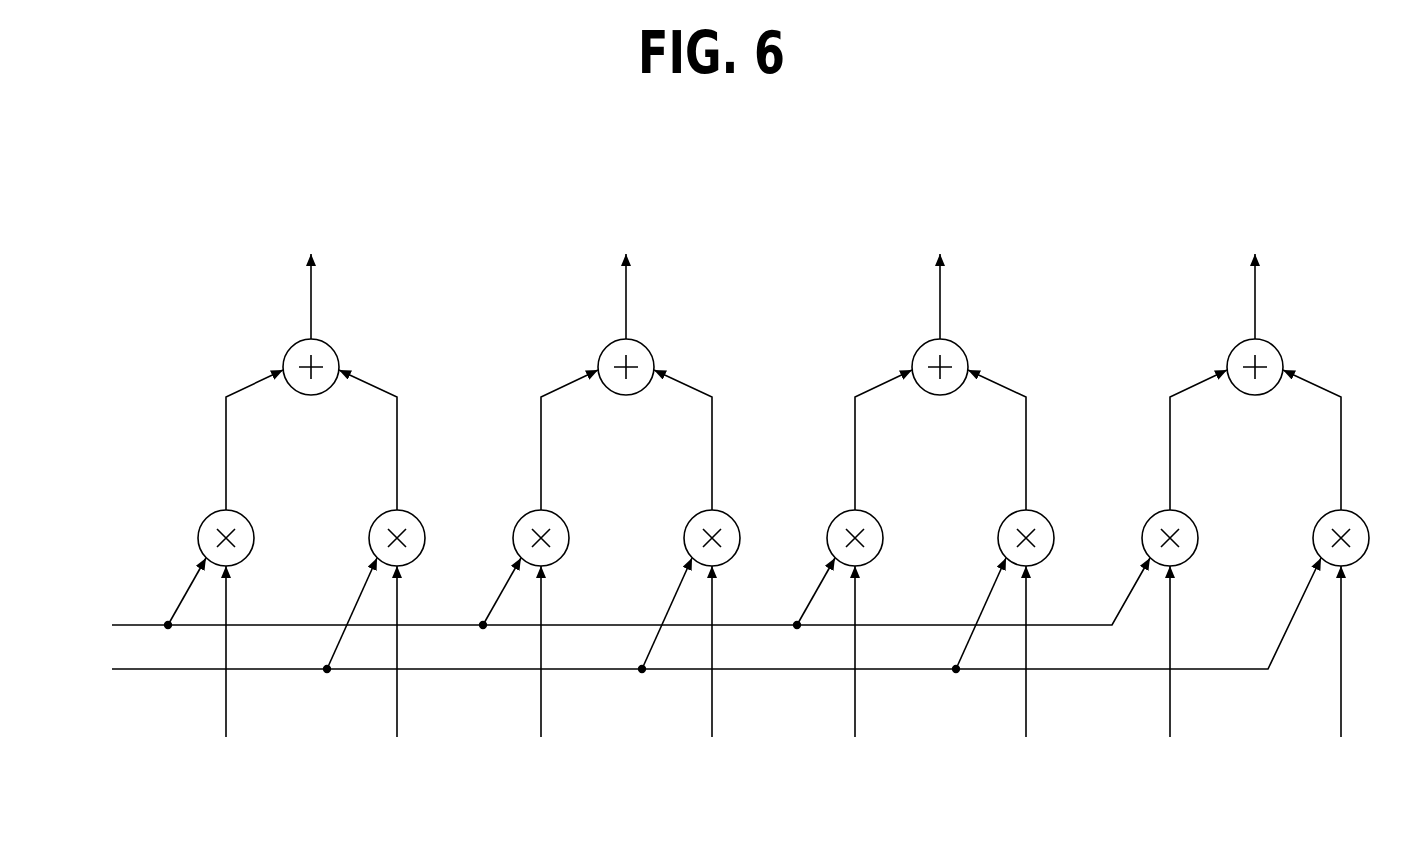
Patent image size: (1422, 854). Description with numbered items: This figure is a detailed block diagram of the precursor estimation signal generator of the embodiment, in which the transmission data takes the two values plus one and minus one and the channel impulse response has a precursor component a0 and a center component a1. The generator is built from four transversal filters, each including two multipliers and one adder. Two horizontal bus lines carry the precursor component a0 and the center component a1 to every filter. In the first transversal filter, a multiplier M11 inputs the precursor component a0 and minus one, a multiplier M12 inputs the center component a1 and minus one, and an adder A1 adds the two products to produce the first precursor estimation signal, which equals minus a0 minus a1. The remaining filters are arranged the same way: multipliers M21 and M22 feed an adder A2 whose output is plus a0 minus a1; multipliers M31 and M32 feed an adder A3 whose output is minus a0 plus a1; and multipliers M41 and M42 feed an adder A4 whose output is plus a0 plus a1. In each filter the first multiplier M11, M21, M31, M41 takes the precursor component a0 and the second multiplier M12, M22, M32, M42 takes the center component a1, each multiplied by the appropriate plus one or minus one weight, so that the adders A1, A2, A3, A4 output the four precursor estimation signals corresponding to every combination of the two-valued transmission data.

The adder A1 is at (332, 343).
The adder A2 is at (647, 343).
The adder A3 is at (961, 343).
The adder A4 is at (1276, 343).
The multiplier M11 is at (247, 518).
The multiplier M12 is at (418, 518).
The multiplier M21 is at (562, 518).
The multiplier M22 is at (733, 518).
The multiplier M31 is at (876, 518).
The multiplier M32 is at (1047, 518).
The multiplier M41 is at (1191, 518).
The multiplier M42 is at (1362, 518).
The precursor component a0 is at (619, 601).
The center component a1 is at (704, 623).